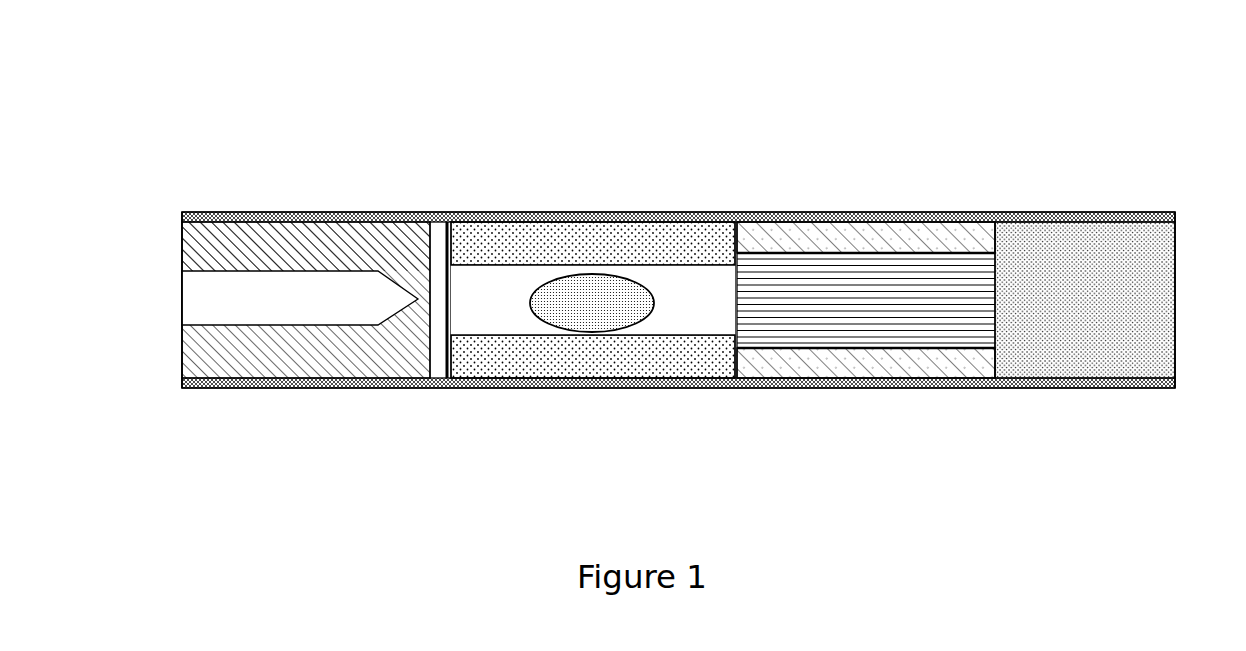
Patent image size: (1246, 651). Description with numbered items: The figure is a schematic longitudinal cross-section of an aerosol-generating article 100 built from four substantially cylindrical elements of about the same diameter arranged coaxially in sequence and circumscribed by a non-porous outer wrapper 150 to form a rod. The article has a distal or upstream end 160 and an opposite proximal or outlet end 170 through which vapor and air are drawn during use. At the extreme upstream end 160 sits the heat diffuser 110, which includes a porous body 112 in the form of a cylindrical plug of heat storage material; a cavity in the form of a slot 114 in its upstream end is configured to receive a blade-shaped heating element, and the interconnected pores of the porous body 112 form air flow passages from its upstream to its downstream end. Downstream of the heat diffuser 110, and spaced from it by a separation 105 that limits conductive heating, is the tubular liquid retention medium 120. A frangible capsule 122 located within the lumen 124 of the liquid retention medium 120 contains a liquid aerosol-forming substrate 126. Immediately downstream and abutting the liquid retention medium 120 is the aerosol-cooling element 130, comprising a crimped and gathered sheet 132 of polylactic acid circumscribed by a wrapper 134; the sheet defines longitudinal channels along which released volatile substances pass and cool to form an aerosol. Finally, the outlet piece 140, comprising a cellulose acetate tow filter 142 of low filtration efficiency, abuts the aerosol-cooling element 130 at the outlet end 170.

The aerosol-generating article 100 is at (240, 103).
The separation 105 is at (440, 366).
The heat diffuser 110 is at (298, 368).
The porous body 112 is at (296, 235).
The slot 114 is at (210, 301).
The tubular liquid retention medium 120 is at (527, 368).
The frangible capsule 122 is at (530, 298).
The lumen 124 is at (690, 317).
The liquid aerosol-forming substrate 126 is at (600, 300).
The aerosol-cooling element 130 is at (820, 368).
The crimped and gathered sheet 132 is at (810, 292).
The wrapper 134 is at (857, 240).
The outlet piece 140 is at (1013, 368).
The cellulose acetate tow filter 142 is at (1092, 250).
The outer wrapper 150 is at (977, 214).
The upstream end 160 is at (178, 243).
The outlet end 170 is at (1178, 252).